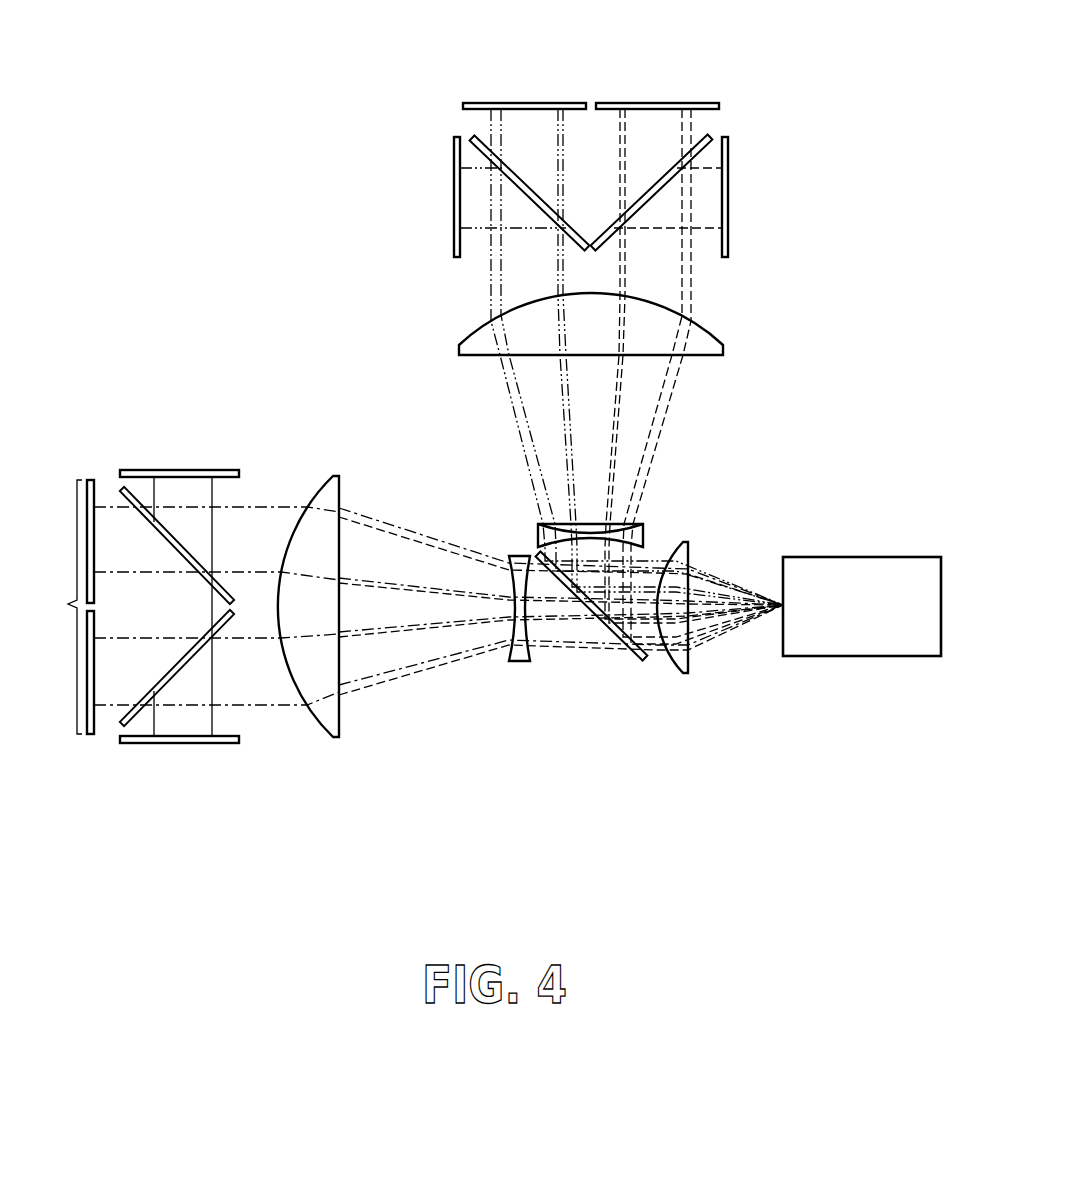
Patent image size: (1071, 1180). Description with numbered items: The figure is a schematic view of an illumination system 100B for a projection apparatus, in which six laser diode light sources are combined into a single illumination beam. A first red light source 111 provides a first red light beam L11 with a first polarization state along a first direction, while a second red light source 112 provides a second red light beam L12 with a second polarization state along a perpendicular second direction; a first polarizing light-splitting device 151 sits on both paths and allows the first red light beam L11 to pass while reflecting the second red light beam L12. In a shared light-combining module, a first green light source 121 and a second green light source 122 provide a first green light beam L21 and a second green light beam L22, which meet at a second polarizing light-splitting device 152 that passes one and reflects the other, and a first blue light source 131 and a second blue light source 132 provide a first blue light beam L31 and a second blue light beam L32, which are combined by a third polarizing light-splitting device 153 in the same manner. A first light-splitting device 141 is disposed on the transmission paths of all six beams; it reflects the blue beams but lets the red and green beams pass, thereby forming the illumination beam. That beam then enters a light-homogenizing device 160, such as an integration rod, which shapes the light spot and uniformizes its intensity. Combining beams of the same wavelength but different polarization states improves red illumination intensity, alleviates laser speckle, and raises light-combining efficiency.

The illumination system 100B is at (484, 455).
The first red light source 111 is at (60, 607).
The second red light source 112 is at (183, 470).
The first green light source 121 is at (525, 103).
The second green light source 122 is at (454, 192).
The first blue light source 131 is at (657, 103).
The second blue light source 132 is at (728, 192).
The first light-splitting device 141 is at (637, 663).
The first polarizing light-splitting device 151 is at (128, 488).
The second polarizing light-splitting device 152 is at (472, 138).
The third polarizing light-splitting device 153 is at (709, 137).
The light-homogenizing device 160 is at (855, 567).
The first red light beam L11 is at (114, 507).
The second red light beam L12 is at (214, 492).
The first green light beam L21 is at (488, 118).
The second green light beam L22 is at (478, 230).
The first blue light beam L31 is at (693, 118).
The second blue light beam L32 is at (700, 230).